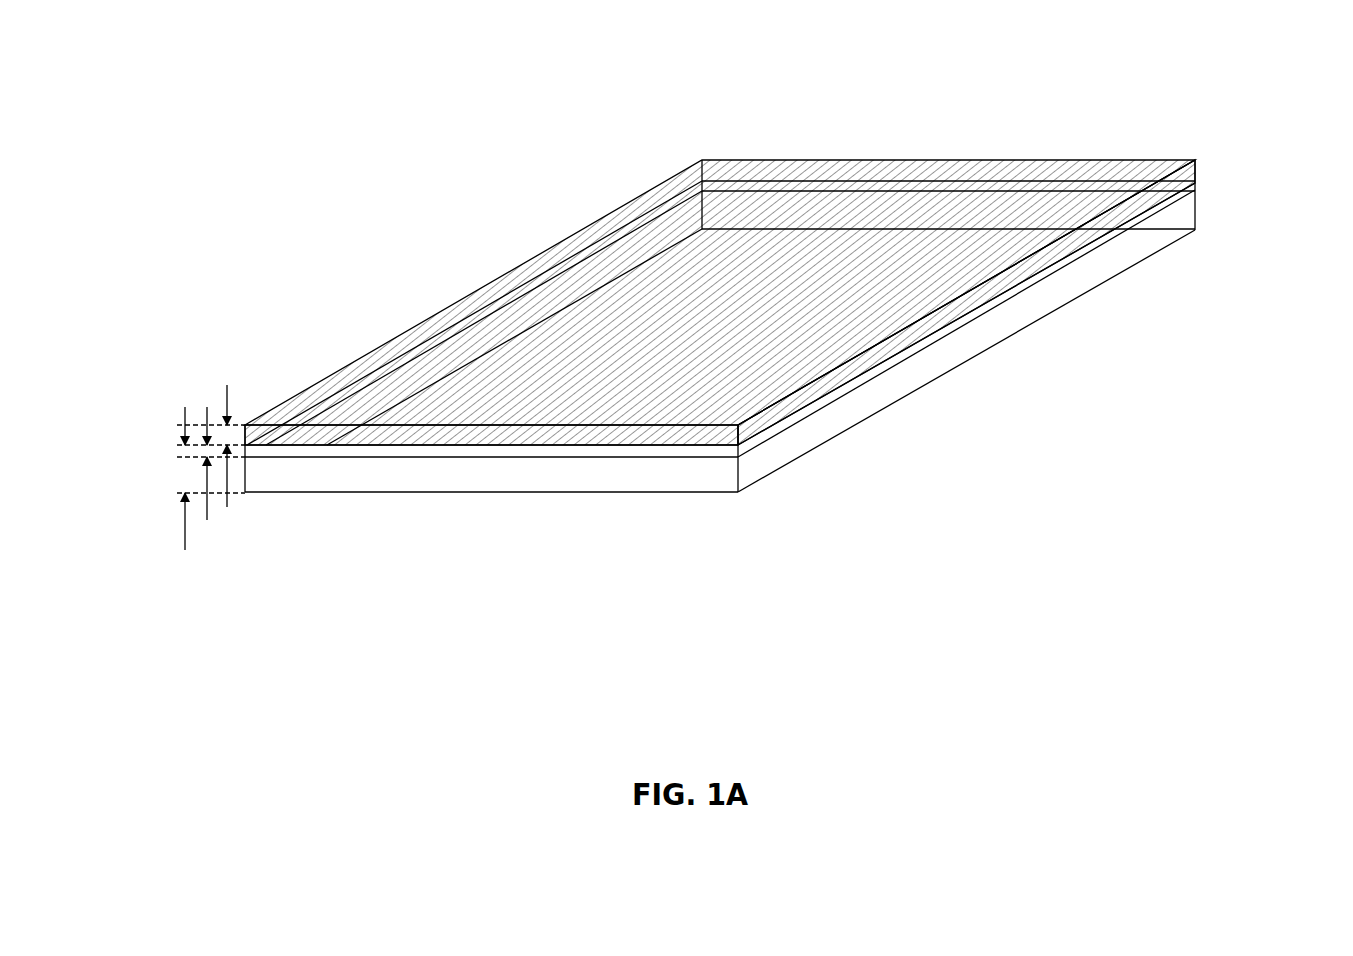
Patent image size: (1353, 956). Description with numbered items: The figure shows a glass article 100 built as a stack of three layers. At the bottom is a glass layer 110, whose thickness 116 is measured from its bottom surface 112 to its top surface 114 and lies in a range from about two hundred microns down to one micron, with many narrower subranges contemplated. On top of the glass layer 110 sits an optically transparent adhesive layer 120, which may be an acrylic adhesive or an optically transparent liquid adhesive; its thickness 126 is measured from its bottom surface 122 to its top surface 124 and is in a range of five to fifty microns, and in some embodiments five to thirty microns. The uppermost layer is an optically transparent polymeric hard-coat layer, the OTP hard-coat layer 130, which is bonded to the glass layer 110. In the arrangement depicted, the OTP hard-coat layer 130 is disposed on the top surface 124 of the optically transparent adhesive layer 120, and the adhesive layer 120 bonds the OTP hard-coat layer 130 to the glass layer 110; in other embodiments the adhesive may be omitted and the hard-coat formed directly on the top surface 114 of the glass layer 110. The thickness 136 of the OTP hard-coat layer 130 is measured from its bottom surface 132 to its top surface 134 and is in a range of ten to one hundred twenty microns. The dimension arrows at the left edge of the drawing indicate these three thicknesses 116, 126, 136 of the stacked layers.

The glass article 100 is at (700, 326).
The glass layer 110 is at (737, 369).
The bottom surface 112 is at (770, 473).
The top surface 114 is at (380, 462).
The thickness 116 is at (185, 537).
The optically transparent adhesive layer 120 is at (768, 264).
The bottom surface 122 is at (1150, 223).
The top surface 124 is at (1115, 228).
The thickness 126 is at (207, 515).
The OTP hard-coat layer 130 is at (933, 322).
The bottom surface 132 is at (868, 372).
The top surface 134 is at (1018, 262).
The thickness 136 is at (227, 392).